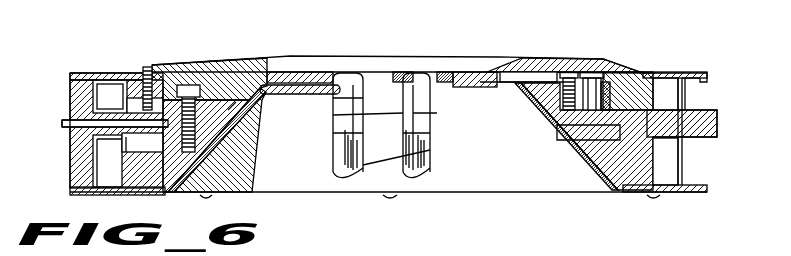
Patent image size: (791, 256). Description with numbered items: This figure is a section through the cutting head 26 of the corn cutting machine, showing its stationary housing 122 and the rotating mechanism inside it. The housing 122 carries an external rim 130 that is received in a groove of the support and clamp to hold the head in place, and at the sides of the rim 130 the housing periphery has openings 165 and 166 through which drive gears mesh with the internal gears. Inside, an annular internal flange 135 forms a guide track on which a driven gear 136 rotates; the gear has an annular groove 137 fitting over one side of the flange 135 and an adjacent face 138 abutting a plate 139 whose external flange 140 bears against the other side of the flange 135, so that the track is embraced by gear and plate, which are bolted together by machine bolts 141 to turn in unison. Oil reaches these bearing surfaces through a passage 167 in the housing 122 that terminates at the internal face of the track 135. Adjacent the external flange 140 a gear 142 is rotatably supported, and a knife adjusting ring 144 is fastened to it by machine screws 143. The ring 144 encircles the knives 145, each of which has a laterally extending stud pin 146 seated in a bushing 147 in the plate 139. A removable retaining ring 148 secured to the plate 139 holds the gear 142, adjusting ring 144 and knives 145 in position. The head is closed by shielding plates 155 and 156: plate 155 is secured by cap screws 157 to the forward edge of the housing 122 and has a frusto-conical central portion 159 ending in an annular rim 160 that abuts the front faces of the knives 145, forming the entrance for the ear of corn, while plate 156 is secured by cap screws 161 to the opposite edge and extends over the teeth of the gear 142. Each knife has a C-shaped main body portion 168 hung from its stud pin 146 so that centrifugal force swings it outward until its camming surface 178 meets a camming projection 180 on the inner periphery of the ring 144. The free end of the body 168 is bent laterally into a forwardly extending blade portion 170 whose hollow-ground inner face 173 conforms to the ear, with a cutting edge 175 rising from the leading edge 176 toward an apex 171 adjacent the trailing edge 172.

The cutting head 26 is at (85, 72).
The housing 122 is at (72, 148).
The rim 130 is at (70, 112).
The annular internal flange 135 is at (157, 148).
The driven gear 136 is at (137, 186).
The annular groove 137 is at (130, 152).
The adjacent face 138 is at (562, 114).
The plate 139 is at (243, 130).
The external flange 140 is at (128, 109).
The machine bolts 141 is at (220, 142).
The gear 142 is at (670, 90).
The machine screws 143 is at (153, 67).
The knife adjusting ring 144 is at (183, 82).
The knives 145 is at (263, 68).
The stud pin 146 is at (593, 75).
The bushing 147 is at (607, 88).
The retaining ring 148 is at (473, 62).
The shielding plate 155 is at (630, 193).
The shielding plate 156 is at (110, 72).
The cap screws 157 is at (208, 196).
The frusto-conical central portion 159 is at (573, 138).
The annular rim 160 is at (306, 93).
The cap screws 161 is at (647, 73).
The opening 165 is at (699, 163).
The opening 166 is at (703, 89).
The passage 167 is at (64, 126).
The main body portion 168 is at (300, 77).
The blade portion 170 is at (337, 133).
The apex 171 is at (343, 168).
The trailing edge 172 is at (350, 115).
The inner face 173 is at (420, 93).
The cutting edge 175 is at (430, 157).
The leading edge 176 is at (350, 99).
The camming surface 178 is at (227, 63).
The camming projection 180 is at (236, 105).